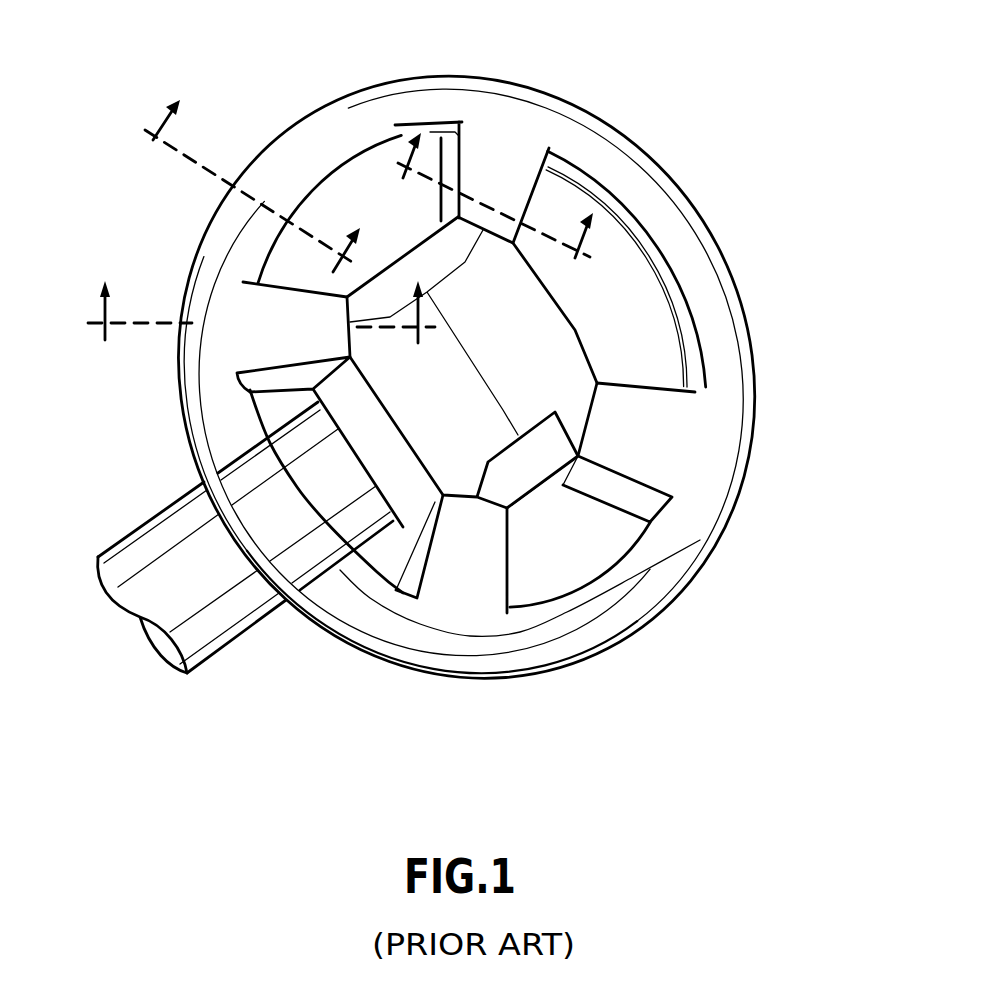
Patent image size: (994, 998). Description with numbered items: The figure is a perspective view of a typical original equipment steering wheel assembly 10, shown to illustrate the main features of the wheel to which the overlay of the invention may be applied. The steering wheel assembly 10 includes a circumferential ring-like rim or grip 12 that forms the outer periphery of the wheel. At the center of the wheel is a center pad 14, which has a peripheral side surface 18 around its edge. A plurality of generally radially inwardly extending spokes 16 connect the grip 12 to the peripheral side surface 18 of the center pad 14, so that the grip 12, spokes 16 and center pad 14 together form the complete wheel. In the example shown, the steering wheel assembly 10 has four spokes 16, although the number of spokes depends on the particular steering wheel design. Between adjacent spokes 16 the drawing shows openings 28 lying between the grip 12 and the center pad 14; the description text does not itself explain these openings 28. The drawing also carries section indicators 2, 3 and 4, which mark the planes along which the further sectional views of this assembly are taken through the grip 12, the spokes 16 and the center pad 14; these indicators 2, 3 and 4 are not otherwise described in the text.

The steering wheel assembly 10 is at (692, 104).
The rim or grip 12 is at (685, 250).
The center pad 14 is at (543, 343).
The spokes 16 is at (510, 168).
The peripheral side surface 18 is at (368, 442).
The windows / openings 28 is at (512, 243).
The section line 2- 2 is at (259, 324).
The section line 3- 3 is at (258, 179).
The section line 4- 4 is at (485, 214).